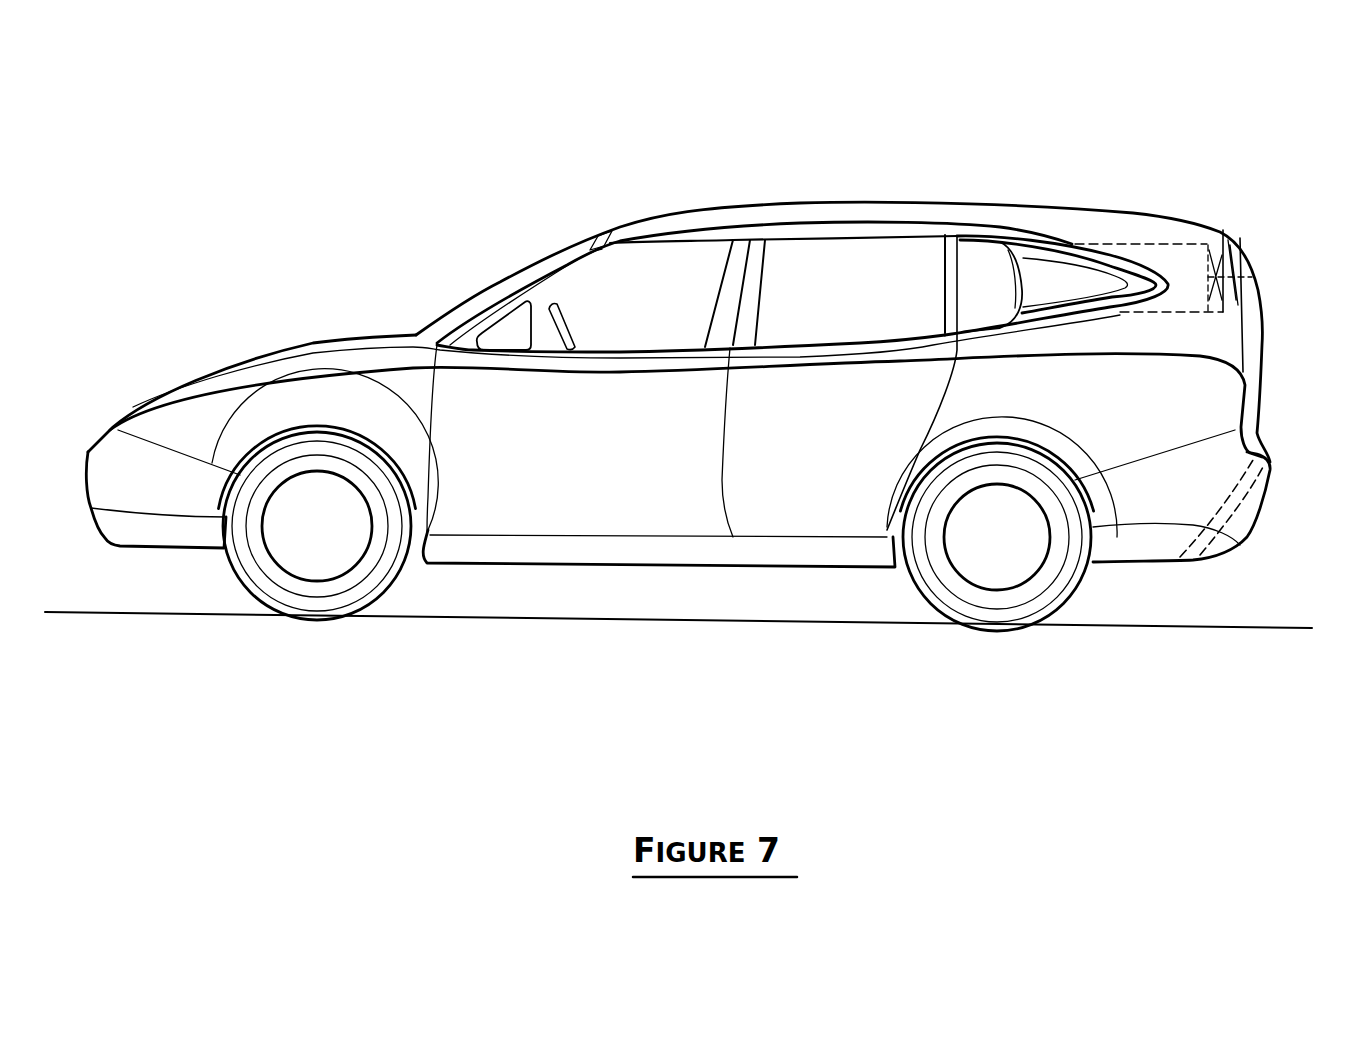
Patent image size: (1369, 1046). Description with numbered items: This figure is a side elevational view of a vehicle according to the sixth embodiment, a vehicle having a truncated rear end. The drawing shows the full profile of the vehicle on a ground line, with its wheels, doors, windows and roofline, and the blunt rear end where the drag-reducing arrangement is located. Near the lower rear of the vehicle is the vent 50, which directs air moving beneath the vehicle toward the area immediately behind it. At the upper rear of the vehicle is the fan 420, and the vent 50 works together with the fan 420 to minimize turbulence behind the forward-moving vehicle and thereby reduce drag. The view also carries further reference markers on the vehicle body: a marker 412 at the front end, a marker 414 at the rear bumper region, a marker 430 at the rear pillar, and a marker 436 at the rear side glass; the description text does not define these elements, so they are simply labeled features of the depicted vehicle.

The front bumper 412 is at (76, 503).
The rear bumper 414 is at (1271, 516).
The vent 50 is at (1173, 580).
The fan 420 is at (1258, 277).
The pillar 430 is at (940, 272).
The rear window 436 is at (1087, 268).